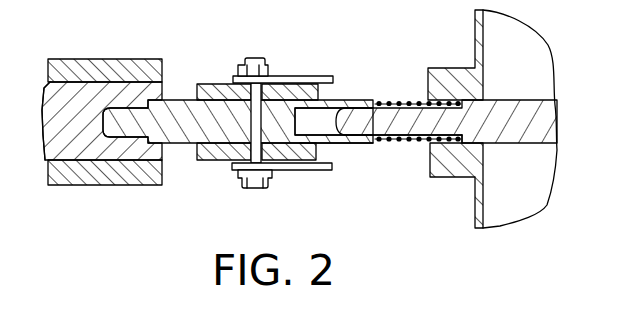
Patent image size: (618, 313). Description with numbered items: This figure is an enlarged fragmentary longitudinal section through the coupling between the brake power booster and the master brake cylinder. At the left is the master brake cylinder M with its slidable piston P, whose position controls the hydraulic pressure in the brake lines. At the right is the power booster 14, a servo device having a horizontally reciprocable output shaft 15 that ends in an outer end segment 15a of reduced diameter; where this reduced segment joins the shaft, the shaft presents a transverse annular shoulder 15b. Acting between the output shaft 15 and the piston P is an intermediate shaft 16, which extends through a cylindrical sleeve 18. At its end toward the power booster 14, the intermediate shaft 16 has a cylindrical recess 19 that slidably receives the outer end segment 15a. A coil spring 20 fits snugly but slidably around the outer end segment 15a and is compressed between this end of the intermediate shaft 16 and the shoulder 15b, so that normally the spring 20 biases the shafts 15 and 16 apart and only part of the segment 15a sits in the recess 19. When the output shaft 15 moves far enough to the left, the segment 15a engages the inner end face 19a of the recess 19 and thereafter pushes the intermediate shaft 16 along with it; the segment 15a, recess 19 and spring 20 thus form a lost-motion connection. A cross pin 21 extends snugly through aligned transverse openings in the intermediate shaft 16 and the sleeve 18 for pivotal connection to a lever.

The piston P is at (42, 100).
The master brake cylinder M is at (98, 187).
The power booster 14 is at (478, 195).
The power booster output shaft 15 is at (557, 128).
The outer end segment 15a is at (385, 140).
The transverse annular shoulder 15b is at (472, 148).
The intermediate shaft 16 is at (186, 147).
The cylindrical sleeve 18 is at (215, 90).
The cylindrical recess 19 is at (325, 118).
The inner end face 19a is at (318, 140).
The coil spring 20 is at (398, 102).
The cross pin 21 is at (253, 184).